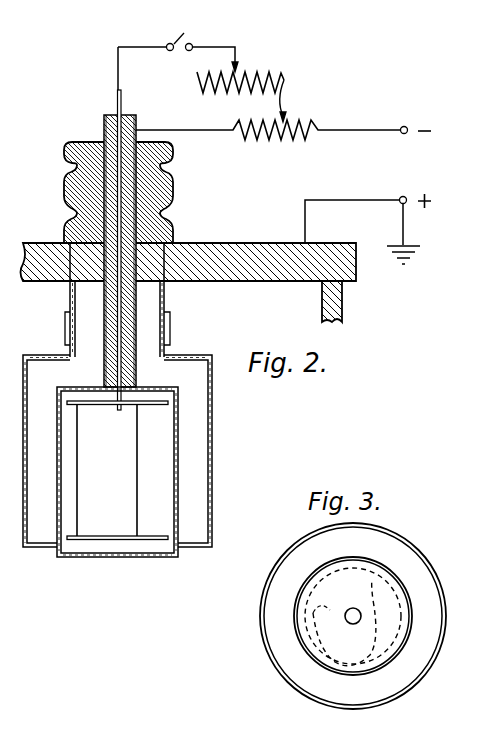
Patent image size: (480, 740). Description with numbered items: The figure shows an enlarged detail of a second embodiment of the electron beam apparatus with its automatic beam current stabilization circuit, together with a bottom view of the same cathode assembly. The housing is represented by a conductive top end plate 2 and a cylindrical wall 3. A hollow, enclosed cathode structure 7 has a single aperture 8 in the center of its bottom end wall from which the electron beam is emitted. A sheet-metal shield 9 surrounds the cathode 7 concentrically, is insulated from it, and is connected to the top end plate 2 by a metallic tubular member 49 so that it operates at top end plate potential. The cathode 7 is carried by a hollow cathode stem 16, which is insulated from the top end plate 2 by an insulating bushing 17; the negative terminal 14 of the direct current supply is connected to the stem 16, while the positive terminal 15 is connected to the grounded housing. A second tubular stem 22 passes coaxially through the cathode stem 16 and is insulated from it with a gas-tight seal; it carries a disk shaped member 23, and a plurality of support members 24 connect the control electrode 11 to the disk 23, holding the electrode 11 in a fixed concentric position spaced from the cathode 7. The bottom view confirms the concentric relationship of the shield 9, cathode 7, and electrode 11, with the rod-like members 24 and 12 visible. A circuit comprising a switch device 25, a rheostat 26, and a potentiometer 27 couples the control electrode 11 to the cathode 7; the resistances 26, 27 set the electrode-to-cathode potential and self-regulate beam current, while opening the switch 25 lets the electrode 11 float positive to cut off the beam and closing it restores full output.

In FIG. 2, the top end plate 2 is at (258, 282).
In FIG. 2, the hollow cylindrical wall 3 is at (342, 299).
In FIG. 2, the cathode structure 7 is at (174, 452).
In FIG. 3, the cathode structure 7 is at (408, 590).
In FIG. 2, the aperture 8 is at (120, 558).
In FIG. 3, the aperture 8 is at (347, 612).
In FIG. 2, the shield 9 is at (212, 407).
In FIG. 3, the shield 9 is at (447, 617).
In FIG. 2, the control electrode 11 is at (85, 535).
In FIG. 3, the control electrode 11 is at (397, 623).
In FIG. 2, the electrode 12 is at (118, 535).
In FIG. 2, the negative terminal 14 is at (400, 135).
In FIG. 2, the positive terminal 15 is at (400, 198).
In FIG. 2, the cathode stem 16 is at (104, 122).
In FIG. 2, the insulating bushing 17 is at (171, 190).
In FIG. 2, the stem 22 is at (116, 96).
In FIG. 2, the disk shaped member 23 is at (95, 405).
In FIG. 2, the support members 24 is at (137, 467).
In FIG. 3, the support members 24 is at (293, 633).
In FIG. 2, the switch device 25 is at (180, 41).
In FIG. 2, the rheostat 26 is at (288, 80).
In FIG. 2, the potentiometer 27 is at (318, 128).
In FIG. 2, the metallic tubular member 49 is at (165, 296).